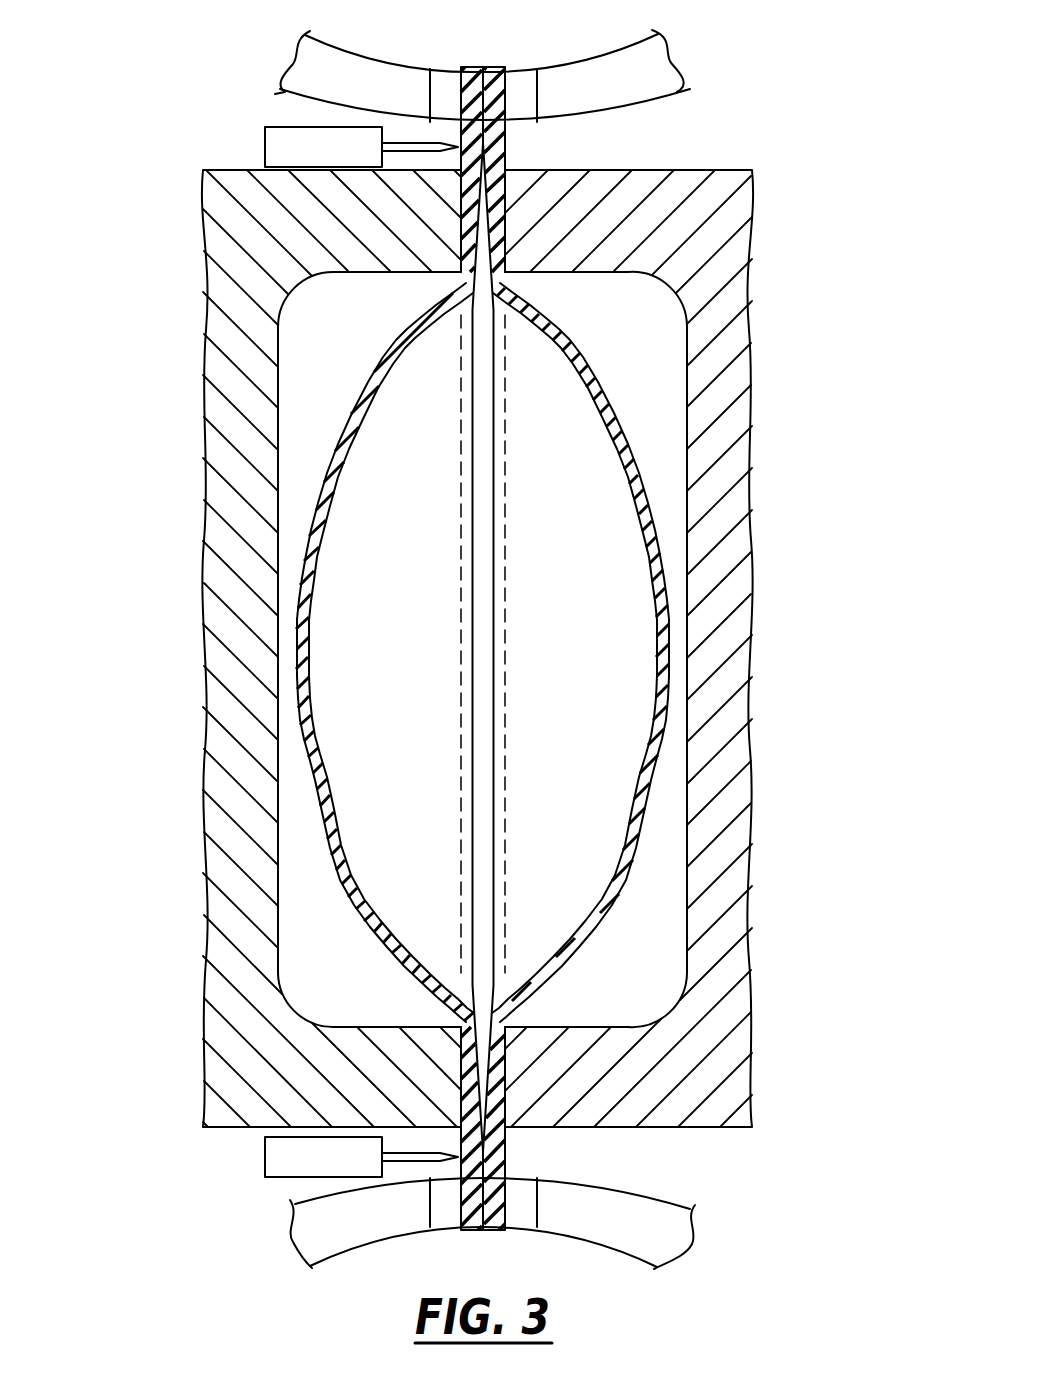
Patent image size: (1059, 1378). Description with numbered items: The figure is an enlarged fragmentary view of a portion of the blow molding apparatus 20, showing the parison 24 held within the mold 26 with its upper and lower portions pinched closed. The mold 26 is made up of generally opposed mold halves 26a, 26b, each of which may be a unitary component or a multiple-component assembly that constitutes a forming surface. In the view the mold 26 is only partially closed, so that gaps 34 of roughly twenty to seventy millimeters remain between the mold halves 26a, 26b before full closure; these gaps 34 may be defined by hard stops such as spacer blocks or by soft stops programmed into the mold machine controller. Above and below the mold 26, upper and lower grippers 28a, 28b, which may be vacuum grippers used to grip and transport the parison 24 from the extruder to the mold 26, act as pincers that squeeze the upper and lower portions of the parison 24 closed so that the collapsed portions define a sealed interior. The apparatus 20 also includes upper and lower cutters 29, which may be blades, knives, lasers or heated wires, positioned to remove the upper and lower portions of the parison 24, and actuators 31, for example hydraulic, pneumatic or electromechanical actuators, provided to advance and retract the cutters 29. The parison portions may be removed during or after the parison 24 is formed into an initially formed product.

The apparatus 20 is at (465, 641).
The parison 24 is at (583, 370).
The mold 26 is at (461, 623).
The mold half 26a is at (228, 880).
The mold half 26b is at (722, 884).
The upper gripper 28a is at (385, 82).
The lower gripper 28b is at (580, 82).
The cutter 29 is at (425, 145).
The actuator 31 is at (233, 147).
The gap 34 is at (484, 600).